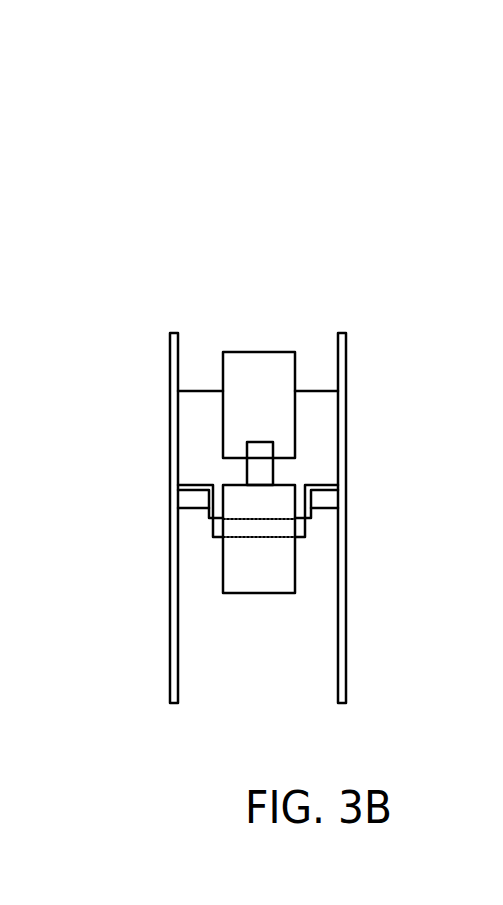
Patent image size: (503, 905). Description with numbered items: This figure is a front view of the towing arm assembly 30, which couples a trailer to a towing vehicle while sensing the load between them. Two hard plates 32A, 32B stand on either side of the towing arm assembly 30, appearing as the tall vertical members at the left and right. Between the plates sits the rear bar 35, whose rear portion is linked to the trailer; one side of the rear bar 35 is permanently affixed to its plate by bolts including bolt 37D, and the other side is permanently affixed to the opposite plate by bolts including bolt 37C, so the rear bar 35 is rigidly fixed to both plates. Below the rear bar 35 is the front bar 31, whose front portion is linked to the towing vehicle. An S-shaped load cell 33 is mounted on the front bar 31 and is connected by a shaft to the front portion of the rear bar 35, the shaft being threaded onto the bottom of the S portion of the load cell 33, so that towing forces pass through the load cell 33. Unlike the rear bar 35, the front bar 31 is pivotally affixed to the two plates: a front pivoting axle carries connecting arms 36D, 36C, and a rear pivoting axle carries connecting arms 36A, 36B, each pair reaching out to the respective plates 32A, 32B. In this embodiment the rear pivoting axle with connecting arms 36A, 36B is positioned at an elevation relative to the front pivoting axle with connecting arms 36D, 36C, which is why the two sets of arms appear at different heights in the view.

The towing arm assembly 30 is at (149, 151).
The front bar 31 is at (280, 557).
The hard plate 32A is at (170, 602).
The hard plate 32B is at (347, 437).
The S-shaped load cell 33 is at (260, 458).
The rear bar 35 is at (266, 368).
The connecting arm 36A is at (195, 485).
The connecting arm 36B is at (323, 490).
The connecting arm 36C is at (327, 508).
The connecting arm 36D is at (182, 509).
The bolt 37C is at (318, 391).
The bolt 37D is at (196, 391).